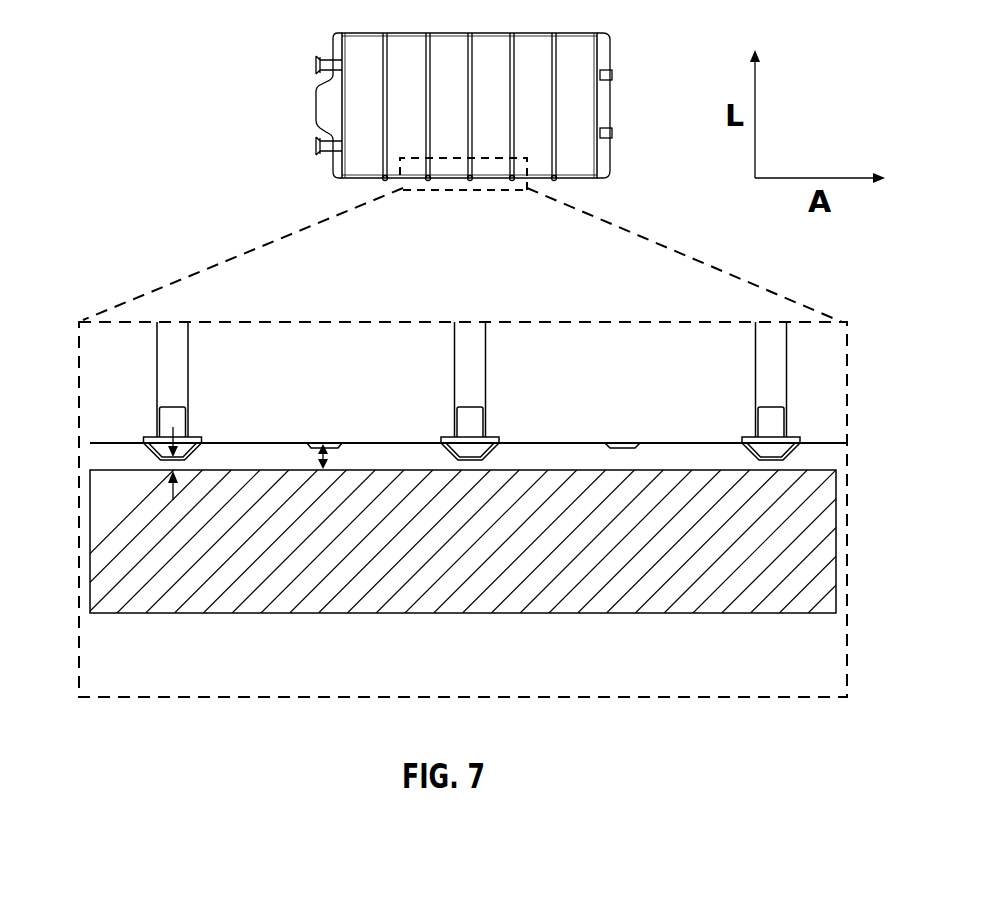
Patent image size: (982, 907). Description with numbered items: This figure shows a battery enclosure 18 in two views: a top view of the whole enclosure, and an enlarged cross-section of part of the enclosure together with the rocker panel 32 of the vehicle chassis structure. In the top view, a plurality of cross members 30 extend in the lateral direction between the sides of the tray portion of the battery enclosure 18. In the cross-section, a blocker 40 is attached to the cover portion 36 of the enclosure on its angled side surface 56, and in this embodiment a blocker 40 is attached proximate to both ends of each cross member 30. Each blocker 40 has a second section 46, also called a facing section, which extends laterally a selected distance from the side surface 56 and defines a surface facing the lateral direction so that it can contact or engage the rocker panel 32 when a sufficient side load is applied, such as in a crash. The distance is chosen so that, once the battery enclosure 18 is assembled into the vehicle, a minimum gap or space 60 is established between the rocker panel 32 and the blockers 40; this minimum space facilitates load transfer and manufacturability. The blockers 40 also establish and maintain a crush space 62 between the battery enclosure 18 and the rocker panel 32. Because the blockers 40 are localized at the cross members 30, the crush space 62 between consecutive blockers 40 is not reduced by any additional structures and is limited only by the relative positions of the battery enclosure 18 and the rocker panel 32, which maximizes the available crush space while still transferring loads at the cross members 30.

The battery enclosure 18 is at (487, 33).
The cross member 30 is at (787, 368).
The rocker panel 32 is at (196, 615).
The cover portion 36 is at (621, 338).
The blocker 40 is at (143, 453).
The second section 46 is at (771, 461).
The angled side surface 56 is at (677, 445).
The minimum gap or space 60 is at (173, 500).
The crush space 62 is at (330, 456).